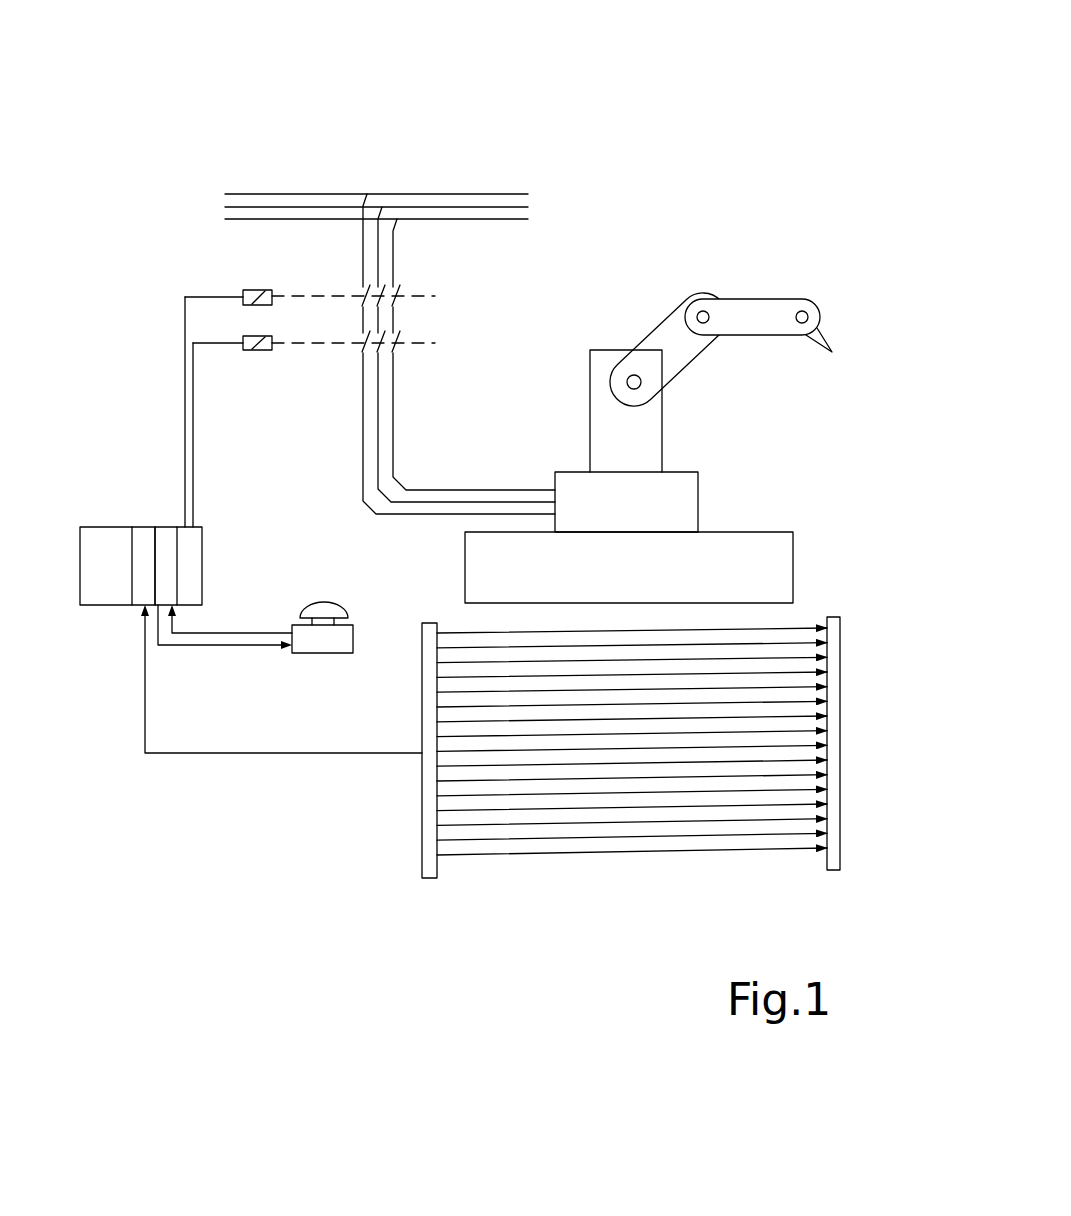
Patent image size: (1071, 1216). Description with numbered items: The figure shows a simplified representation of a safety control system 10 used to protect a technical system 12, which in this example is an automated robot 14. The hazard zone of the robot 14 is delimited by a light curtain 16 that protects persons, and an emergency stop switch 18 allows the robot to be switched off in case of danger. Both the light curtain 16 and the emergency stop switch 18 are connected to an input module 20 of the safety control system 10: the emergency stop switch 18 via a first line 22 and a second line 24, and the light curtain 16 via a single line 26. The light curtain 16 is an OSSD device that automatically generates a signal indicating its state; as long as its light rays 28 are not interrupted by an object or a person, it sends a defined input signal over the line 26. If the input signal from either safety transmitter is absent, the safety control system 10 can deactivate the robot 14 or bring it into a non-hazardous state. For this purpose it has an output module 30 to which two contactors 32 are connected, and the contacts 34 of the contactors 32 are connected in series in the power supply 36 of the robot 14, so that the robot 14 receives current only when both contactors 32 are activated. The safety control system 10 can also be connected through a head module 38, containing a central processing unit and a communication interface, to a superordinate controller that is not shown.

The safety control system 10 is at (110, 480).
The technical system 12 is at (710, 384).
The automated robot 14 is at (667, 345).
The light curtain 16 is at (631, 857).
The emergency stop switch 18 is at (313, 640).
The input module 20 is at (165, 527).
The first line 22 is at (202, 648).
The second line 24 is at (205, 633).
The single line 26 is at (243, 754).
The light rays 28 is at (553, 823).
The output module 30 is at (190, 562).
The contactors 32 is at (252, 290).
The contacts 34 is at (378, 312).
The power supply 36 is at (383, 210).
The head module 38 is at (97, 552).